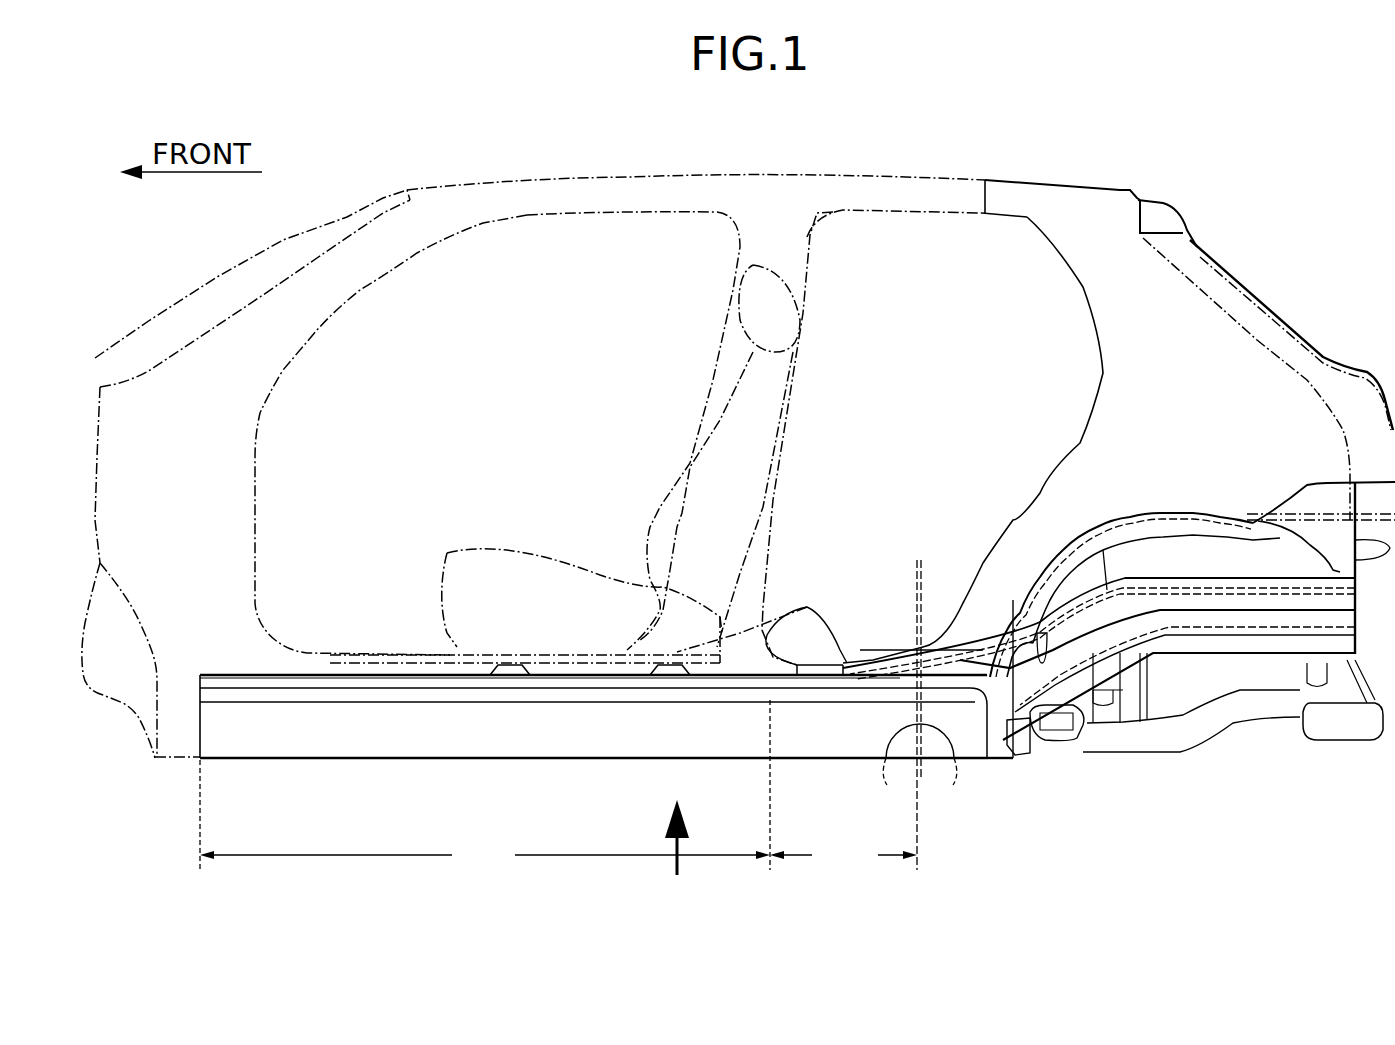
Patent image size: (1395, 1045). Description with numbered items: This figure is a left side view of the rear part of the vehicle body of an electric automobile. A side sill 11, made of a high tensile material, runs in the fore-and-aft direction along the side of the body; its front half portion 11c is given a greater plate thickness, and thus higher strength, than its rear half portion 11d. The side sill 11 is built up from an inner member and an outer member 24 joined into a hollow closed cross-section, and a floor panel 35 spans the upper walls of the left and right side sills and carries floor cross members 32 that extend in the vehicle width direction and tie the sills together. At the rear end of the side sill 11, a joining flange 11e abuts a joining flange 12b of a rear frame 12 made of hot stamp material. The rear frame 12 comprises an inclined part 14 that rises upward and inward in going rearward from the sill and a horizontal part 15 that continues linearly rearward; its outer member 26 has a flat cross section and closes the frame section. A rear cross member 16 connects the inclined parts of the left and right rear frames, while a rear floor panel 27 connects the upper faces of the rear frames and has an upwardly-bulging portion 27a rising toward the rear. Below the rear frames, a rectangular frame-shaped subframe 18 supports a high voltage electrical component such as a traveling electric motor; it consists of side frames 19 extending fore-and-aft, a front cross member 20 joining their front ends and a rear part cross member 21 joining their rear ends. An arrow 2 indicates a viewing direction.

The viewing direction arrow 2 is at (676, 860).
The side sill 11 is at (512, 767).
The front half portion 11c is at (485, 786).
The rear half portion 11d is at (843, 856).
The joining flange 11e is at (905, 735).
The rear frame 12 is at (1128, 555).
The joining flange 12b is at (938, 745).
The inclined part 14 is at (1055, 590).
The horizontal part 15 is at (1198, 556).
The rear cross member 16 is at (1025, 740).
The subframe 18 is at (1232, 748).
The side frame 19 is at (1180, 740).
The front cross member 20 is at (1098, 750).
The rear part cross member 21 is at (1370, 750).
The outer member 24 is at (583, 740).
The outer member 26 is at (1173, 597).
The rear floor panel 27 is at (1078, 528).
The upwardly-bulging portion 27a is at (1247, 518).
The floor cross member 32 is at (510, 665).
The floor panel 35 is at (390, 680).